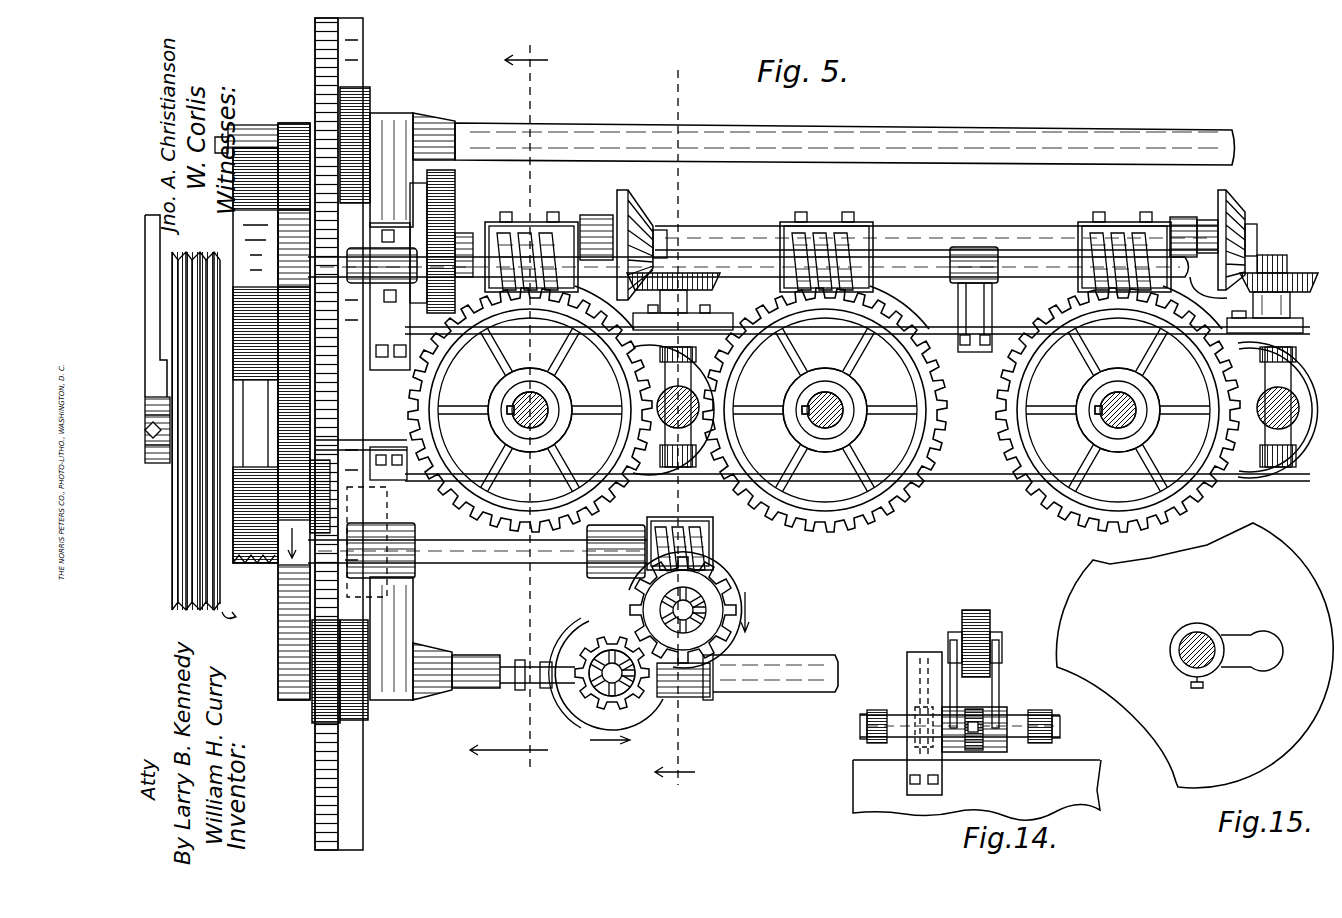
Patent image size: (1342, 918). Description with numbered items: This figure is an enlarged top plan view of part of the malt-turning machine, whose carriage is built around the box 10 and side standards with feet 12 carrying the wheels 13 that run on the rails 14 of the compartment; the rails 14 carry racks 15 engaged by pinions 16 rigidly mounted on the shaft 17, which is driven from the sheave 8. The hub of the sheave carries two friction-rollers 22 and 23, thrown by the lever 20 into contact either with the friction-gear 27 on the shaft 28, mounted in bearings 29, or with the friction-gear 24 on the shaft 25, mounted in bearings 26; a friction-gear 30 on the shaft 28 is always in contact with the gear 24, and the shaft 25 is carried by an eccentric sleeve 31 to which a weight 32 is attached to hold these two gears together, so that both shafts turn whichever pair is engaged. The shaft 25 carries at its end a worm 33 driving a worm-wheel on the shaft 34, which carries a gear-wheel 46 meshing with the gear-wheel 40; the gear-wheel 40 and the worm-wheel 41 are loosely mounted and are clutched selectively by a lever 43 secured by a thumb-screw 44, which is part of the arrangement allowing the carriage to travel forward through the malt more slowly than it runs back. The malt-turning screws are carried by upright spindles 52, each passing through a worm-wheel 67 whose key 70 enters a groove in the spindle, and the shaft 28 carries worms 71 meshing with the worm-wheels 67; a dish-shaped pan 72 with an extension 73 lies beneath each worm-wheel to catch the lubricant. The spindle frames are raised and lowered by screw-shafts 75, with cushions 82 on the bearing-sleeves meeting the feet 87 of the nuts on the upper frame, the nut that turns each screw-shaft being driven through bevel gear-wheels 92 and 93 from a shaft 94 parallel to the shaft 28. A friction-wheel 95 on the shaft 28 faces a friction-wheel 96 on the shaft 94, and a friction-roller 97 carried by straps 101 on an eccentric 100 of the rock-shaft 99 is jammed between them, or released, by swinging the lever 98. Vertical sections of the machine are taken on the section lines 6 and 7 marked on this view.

In FIG. 5, the section line 6 6 is at (675, 424).
In FIG. 5, the section line 7 7 is at (509, 407).
In FIG. 5, the sheave 8 is at (172, 583).
In FIG. 5, the box 10 is at (148, 438).
In FIG. 5, the feet 12 is at (392, 112).
In FIG. 5, the wheels 13 is at (365, 88).
In FIG. 5, the rails 14 is at (341, 434).
In FIG. 5, the racks 15 is at (322, 58).
In FIG. 5, the pinions 16 is at (330, 702).
In FIG. 5, the shaft 17 is at (960, 135).
In FIG. 5, the lever 20 is at (152, 323).
In FIG. 5, the friction-roller 22 is at (229, 252).
In FIG. 5, the friction-roller 23 is at (310, 398).
In FIG. 5, the friction-gear 24 is at (292, 655).
In FIG. 15, the friction-gear 24 is at (1194, 655).
In FIG. 5, the shaft 25 is at (458, 562).
In FIG. 5, the bearings 26 is at (398, 532).
In FIG. 5, the friction-gear 27 is at (246, 344).
In FIG. 5, the shaft 28 is at (727, 265).
In FIG. 5, the bearings 29 is at (375, 263).
In FIG. 5, the friction-gear 30 is at (290, 130).
In FIG. 5, the eccentric sleeve 31 is at (495, 556).
In FIG. 15, the eccentric sleeve 31 is at (1207, 642).
In FIG. 5, the weight 32 is at (342, 482).
In FIG. 15, the weight 32 is at (1280, 643).
In FIG. 5, the worm 33 is at (702, 548).
In FIG. 5, the shaft 34 is at (668, 608).
In FIG. 5, the gear-wheel 40 is at (585, 688).
In FIG. 5, the worm-wheel 41 is at (592, 722).
In FIG. 5, the lever 43 is at (510, 668).
In FIG. 5, the thumb-screw 44 is at (520, 681).
In FIG. 5, the gear-wheel 46 is at (738, 590).
In FIG. 5, the spindles 52 is at (545, 404).
In FIG. 5, the worm-wheel 67 is at (495, 420).
In FIG. 5, the key 70 is at (511, 407).
In FIG. 5, the worms 71 is at (527, 240).
In FIG. 5, the pan 72 is at (1040, 330).
In FIG. 5, the extension 73 is at (783, 225).
In FIG. 5, the screw-shafts 75 is at (713, 398).
In FIG. 5, the cushions 82 is at (650, 357).
In FIG. 5, the feet 87 is at (650, 443).
In FIG. 5, the bevel gear-wheel 92 is at (702, 283).
In FIG. 5, the bevel gear-wheel 93 is at (632, 214).
In FIG. 5, the shaft 94 is at (958, 238).
In FIG. 5, the friction-wheel 95 is at (467, 237).
In FIG. 5, the friction-wheel 96 is at (452, 165).
In FIG. 5, the friction-roller 97 is at (448, 215).
In FIG. 14, the friction-roller 97 is at (975, 615).
In FIG. 14, the lever 98 is at (868, 738).
In FIG. 14, the rock-shaft 99 is at (1018, 738).
In FIG. 14, the eccentric 100 is at (975, 752).
In FIG. 14, the straps 101 is at (950, 663).